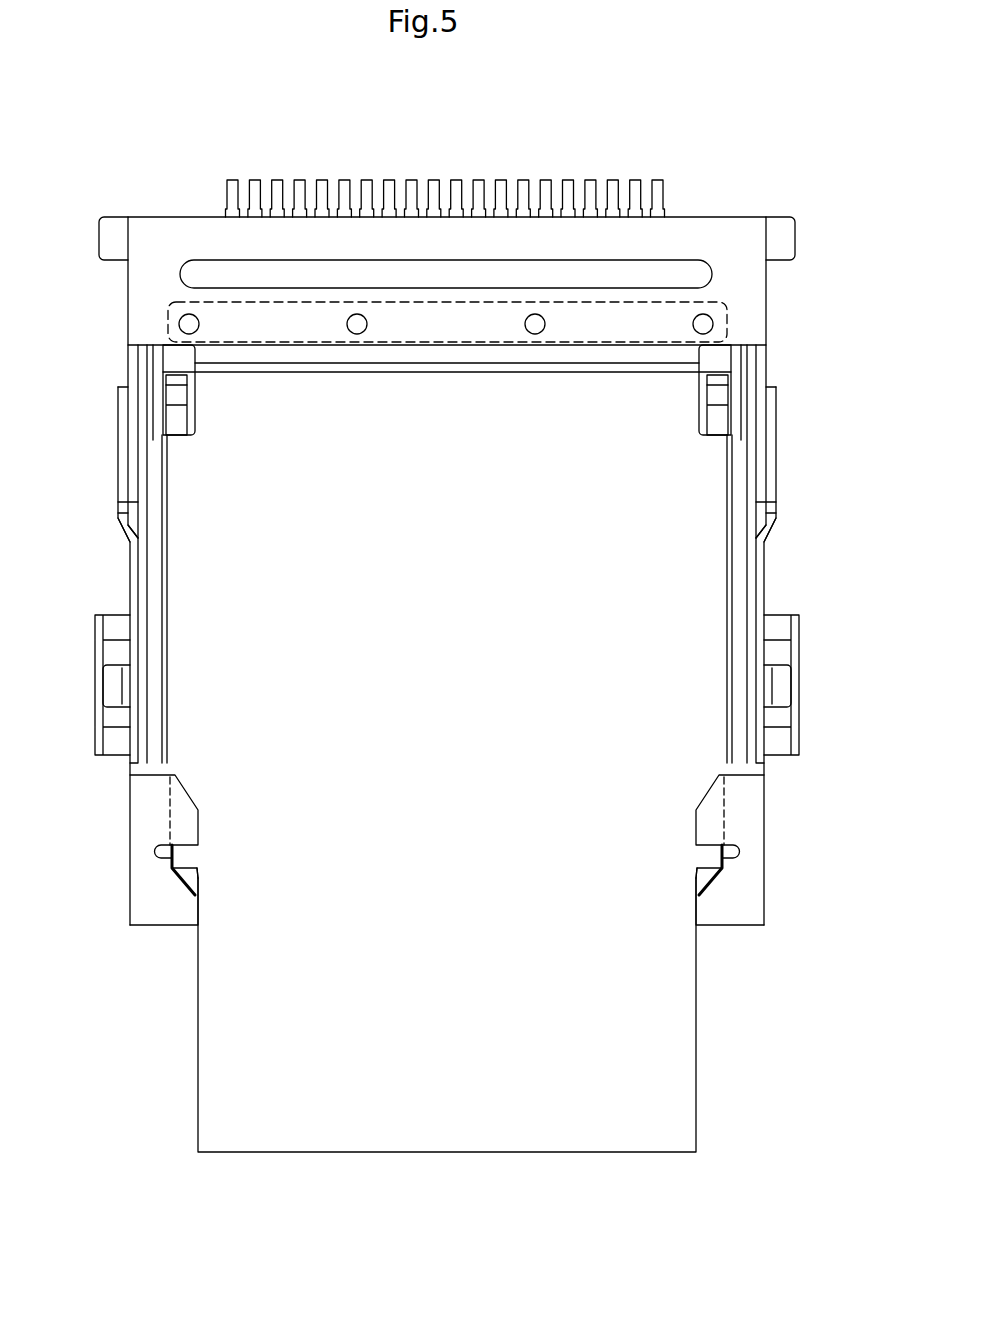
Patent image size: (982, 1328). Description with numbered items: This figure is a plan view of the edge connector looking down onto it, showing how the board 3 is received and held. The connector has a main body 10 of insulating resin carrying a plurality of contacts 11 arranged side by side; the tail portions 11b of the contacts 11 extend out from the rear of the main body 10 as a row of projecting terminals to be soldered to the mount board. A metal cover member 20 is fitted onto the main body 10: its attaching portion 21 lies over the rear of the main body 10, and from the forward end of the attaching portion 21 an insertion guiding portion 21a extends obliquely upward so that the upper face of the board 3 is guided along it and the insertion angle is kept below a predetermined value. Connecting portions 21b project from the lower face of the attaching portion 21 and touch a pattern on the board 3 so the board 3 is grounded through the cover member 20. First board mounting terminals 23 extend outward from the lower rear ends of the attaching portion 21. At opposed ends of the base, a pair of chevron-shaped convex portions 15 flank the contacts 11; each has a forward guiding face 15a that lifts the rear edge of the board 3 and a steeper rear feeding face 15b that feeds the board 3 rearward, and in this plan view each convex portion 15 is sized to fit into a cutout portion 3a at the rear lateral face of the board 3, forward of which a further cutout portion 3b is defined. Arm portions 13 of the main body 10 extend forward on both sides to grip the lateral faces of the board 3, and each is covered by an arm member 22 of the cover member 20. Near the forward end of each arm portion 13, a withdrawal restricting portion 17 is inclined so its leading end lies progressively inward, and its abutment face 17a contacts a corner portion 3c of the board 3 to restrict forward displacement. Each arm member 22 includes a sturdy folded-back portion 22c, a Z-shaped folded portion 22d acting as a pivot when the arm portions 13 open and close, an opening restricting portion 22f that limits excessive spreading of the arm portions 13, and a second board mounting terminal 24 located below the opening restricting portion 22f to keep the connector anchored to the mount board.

The board 3 is at (432, 1132).
The cutout portion 3a is at (190, 430).
The cutout portion 3b is at (190, 873).
The corner portion 3c is at (163, 872).
The main body 10 is at (153, 580).
The contact 11 is at (445, 163).
The tail portion 11b is at (301, 183).
The arm portion 13 is at (152, 550).
The convex portion 15 is at (450, 396).
The guiding face 15a is at (170, 417).
The feeding face 15b is at (176, 380).
The withdrawal restricting portion 17 is at (435, 892).
The abutment face 17a is at (200, 884).
The cover member 20 is at (186, 215).
The attaching portion 21 is at (447, 304).
The insertion guiding portion 21a is at (440, 372).
The connecting portion 21b is at (356, 328).
The arm member 22 is at (449, 635).
The folded-back portion 22c is at (121, 447).
The folded portion 22d is at (123, 528).
The opening restricting portion 22f is at (97, 637).
The first board mounting terminal 23 is at (113, 230).
The second board mounting terminal 24 is at (115, 693).